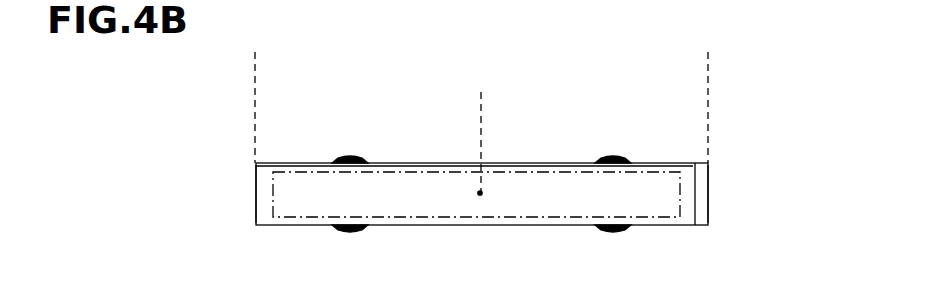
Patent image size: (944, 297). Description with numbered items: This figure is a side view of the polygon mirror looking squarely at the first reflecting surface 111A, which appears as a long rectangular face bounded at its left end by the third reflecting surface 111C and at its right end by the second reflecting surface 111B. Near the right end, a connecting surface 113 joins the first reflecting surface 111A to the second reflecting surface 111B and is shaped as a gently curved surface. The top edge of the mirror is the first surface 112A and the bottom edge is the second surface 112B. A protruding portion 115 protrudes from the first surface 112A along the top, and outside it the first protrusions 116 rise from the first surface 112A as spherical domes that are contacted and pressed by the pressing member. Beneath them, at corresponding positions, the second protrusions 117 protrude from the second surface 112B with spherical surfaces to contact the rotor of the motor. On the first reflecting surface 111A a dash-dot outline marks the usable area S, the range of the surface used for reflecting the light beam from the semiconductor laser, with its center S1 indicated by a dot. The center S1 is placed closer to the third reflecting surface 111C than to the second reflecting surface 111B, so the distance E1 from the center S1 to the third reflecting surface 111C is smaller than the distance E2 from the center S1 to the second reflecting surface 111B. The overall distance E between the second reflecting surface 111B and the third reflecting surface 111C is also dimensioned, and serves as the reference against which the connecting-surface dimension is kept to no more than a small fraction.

The first reflecting surface 111A is at (265, 207).
The second reflecting surface 111B is at (708, 189).
The third reflecting surface 111C is at (256, 185).
The first surface 112A is at (669, 163).
The second surface 112B is at (663, 226).
The connecting surface 113 is at (700, 205).
The protruding portion 115 is at (505, 163).
The first protrusions 116 is at (352, 156).
The second protrusions 117 is at (350, 231).
The usable area S is at (547, 200).
The center of the usable area S1 is at (480, 195).
The distance between the second reflecting surface and the third reflecting surface E is at (708, 61).
The distance from the center of the usable area to the third reflecting surface E1 is at (481, 99).
The distance from the center of the usable area to the second reflecting surface E2 is at (481, 99).